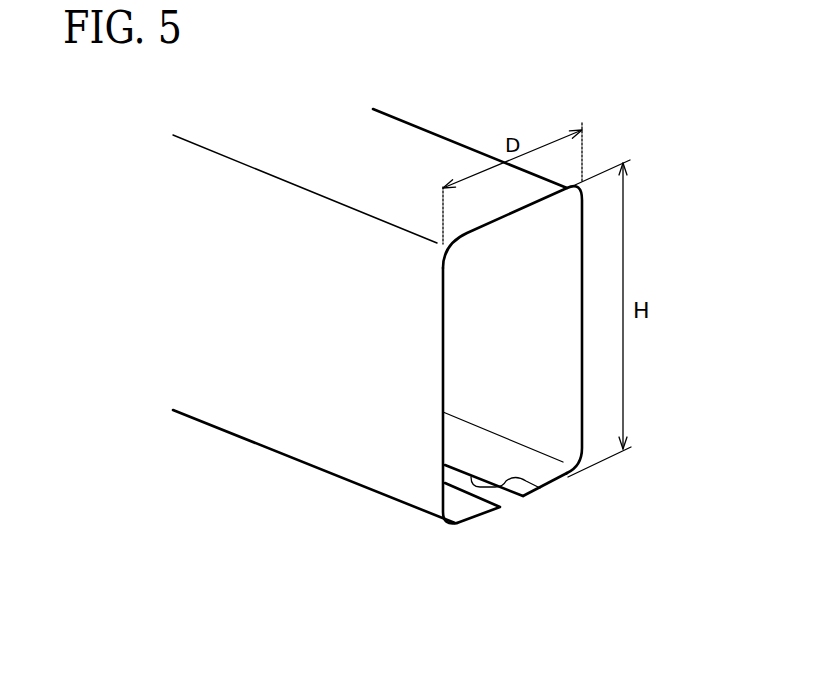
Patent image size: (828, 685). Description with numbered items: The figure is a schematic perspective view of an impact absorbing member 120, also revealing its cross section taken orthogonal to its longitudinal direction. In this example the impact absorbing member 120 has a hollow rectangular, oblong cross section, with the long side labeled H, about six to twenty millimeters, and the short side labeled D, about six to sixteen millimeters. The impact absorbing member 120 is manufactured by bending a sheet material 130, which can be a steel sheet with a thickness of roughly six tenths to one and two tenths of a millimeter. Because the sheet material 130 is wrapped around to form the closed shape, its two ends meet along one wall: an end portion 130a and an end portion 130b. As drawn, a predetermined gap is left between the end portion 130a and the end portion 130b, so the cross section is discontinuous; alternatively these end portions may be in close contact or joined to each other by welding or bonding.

The impact absorbing member 120 is at (430, 168).
The sheet material 130 is at (459, 508).
The end portion 130a is at (492, 500).
The end portion 130b is at (540, 489).